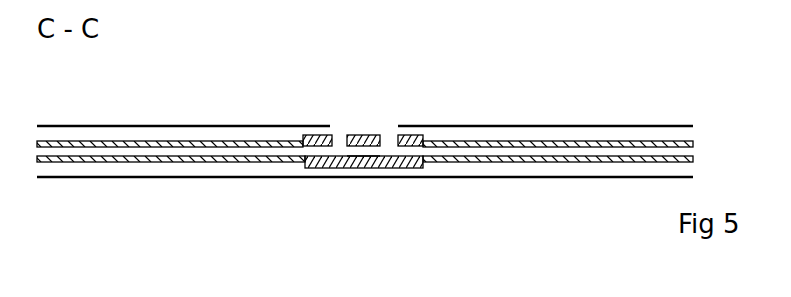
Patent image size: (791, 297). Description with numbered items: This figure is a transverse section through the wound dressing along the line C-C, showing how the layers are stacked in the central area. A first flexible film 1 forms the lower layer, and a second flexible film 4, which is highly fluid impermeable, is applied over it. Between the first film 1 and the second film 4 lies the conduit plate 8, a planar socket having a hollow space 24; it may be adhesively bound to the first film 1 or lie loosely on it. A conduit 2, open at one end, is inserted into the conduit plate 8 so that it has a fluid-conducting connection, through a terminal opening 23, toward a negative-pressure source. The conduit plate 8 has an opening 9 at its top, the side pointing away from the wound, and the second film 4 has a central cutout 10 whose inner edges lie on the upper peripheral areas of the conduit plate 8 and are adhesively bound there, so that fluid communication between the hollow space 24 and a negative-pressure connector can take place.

The first flexible film 1 is at (518, 178).
The conduit 2 is at (552, 153).
The second flexible film 4 is at (570, 124).
The conduit plate 8 is at (382, 168).
The opening 9 is at (389, 138).
The central cutout 10 is at (362, 132).
The terminal opening 23 is at (333, 148).
The hollow space 24 is at (370, 152).